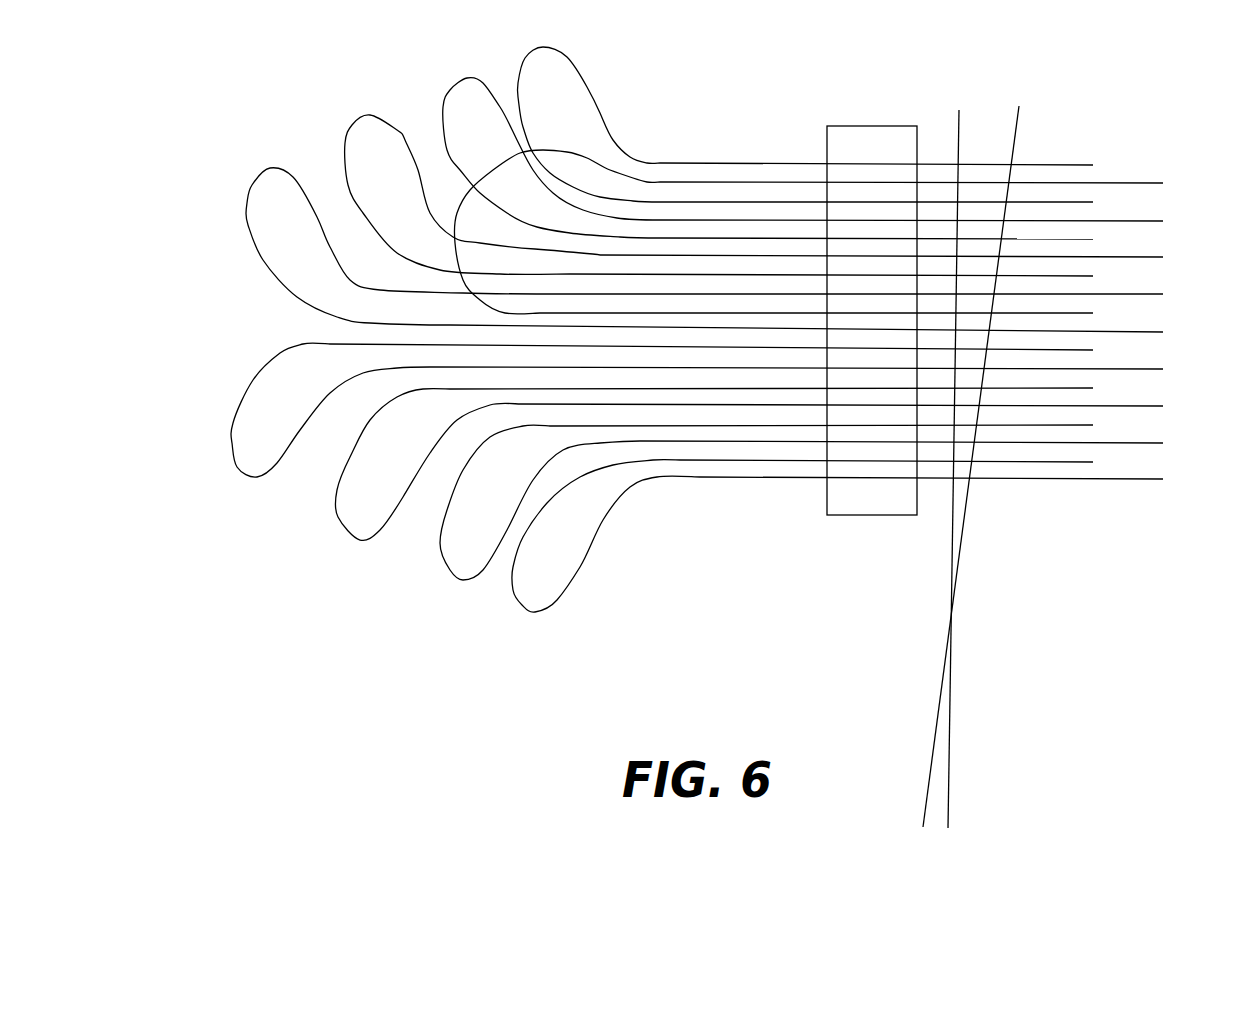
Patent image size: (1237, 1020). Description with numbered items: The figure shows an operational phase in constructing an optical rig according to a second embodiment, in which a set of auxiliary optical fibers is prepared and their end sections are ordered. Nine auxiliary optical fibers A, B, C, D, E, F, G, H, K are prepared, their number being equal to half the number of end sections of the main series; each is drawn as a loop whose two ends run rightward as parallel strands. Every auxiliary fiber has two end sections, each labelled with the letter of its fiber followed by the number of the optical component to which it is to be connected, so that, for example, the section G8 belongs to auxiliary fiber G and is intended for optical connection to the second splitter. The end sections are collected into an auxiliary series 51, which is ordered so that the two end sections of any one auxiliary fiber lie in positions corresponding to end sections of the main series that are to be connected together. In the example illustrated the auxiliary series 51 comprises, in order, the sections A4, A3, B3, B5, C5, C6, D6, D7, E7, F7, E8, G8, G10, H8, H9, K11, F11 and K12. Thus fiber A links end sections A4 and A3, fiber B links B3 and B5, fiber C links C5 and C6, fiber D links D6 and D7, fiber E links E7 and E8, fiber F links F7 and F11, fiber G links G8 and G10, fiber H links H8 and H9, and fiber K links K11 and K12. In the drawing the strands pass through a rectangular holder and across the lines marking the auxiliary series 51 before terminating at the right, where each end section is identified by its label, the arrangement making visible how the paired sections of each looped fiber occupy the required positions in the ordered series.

The auxiliary optical fiber A is at (523, 605).
The auxiliary optical fiber B is at (445, 575).
The auxiliary optical fiber C is at (337, 530).
The auxiliary optical fiber D is at (242, 473).
The auxiliary optical fiber E is at (272, 167).
The auxiliary optical fiber F is at (643, 181).
The auxiliary optical fiber G is at (370, 113).
The auxiliary optical fiber H is at (473, 78).
The auxiliary optical fiber K is at (587, 83).
The auxiliary series 51 is at (939, 137).
The end section K12 is at (903, 165).
The end section F11 is at (938, 183).
The end section K11 is at (903, 202).
The end section H9 is at (933, 221).
The end section H8 is at (897, 239).
The end section G10 is at (910, 257).
The end section G8 is at (852, 276).
The end section E8 is at (887, 294).
The end section F7 is at (835, 313).
The end section E7 is at (827, 332).
The end section D7 is at (732, 350).
The end section D6 is at (818, 369).
The end section C6 is at (791, 388).
The end section C5 is at (862, 406).
The end section B5 is at (841, 425).
The end section B3 is at (922, 443).
The end section A3 is at (906, 462).
The end section A4 is at (952, 479).